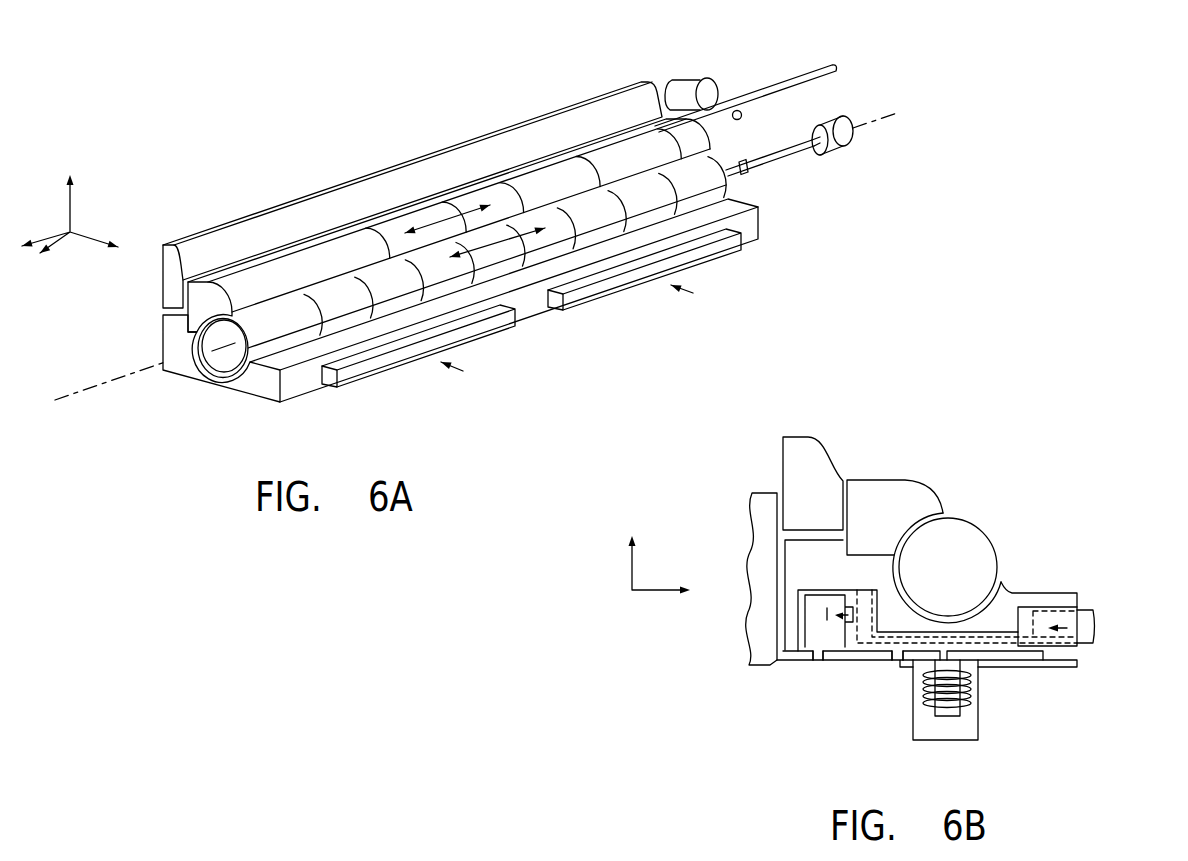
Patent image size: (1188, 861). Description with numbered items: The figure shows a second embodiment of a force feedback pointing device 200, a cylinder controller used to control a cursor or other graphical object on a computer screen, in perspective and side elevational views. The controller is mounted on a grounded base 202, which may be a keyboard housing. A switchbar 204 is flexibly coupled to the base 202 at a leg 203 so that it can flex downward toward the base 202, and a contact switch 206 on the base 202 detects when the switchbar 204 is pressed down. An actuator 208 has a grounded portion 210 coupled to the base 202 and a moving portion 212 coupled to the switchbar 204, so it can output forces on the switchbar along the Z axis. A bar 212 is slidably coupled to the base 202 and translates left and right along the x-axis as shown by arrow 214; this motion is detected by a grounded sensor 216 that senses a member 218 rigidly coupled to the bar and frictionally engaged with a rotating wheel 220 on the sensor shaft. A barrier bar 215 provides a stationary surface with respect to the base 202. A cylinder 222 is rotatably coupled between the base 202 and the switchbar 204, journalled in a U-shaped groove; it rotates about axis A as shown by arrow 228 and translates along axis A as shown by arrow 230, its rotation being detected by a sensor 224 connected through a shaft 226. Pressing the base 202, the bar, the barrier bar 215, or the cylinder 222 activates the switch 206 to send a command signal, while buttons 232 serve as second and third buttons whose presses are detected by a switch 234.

In FIG. 6A, the force feedback pointing device 200 is at (469, 228).
In FIG. 6B, the force feedback pointing device 200 is at (901, 581).
In FIG. 6B, the base 202 is at (765, 662).
In FIG. 6B, the leg 203 is at (802, 655).
In FIG. 6A, the switchbar 204 is at (177, 357).
In FIG. 6B, the switchbar 204 is at (834, 583).
In FIG. 6B, the contact switch 206 is at (900, 663).
In FIG. 6B, the actuator 208 is at (963, 740).
In FIG. 6B, the grounded portion 210 is at (967, 697).
In FIG. 6A, the bar 212 is at (548, 178).
In FIG. 6A, the arrow 214 is at (450, 213).
In FIG. 6B, the arrow 214 is at (905, 487).
In FIG. 6A, the barrier bar 215 is at (235, 232).
In FIG. 6B, the barrier bar 215 is at (805, 445).
In FIG. 6A, the grounded sensor 216 is at (690, 85).
In FIG. 6A, the member 218 is at (790, 80).
In FIG. 6A, the rotating wheel 220 is at (741, 113).
In FIG. 6A, the cylinder 222 is at (278, 327).
In FIG. 6B, the cylinder 222 is at (975, 533).
In FIG. 6A, the sensor 224 is at (842, 120).
In FIG. 6A, the shaft 226 is at (807, 148).
In FIG. 6A, the arrow 228 is at (763, 172).
In FIG. 6A, the arrow 230 is at (500, 237).
In FIG. 6A, the buttons 232 is at (387, 358).
In FIG. 6B, the buttons 232 is at (1093, 628).
In FIG. 6B, the switch 234 is at (837, 630).